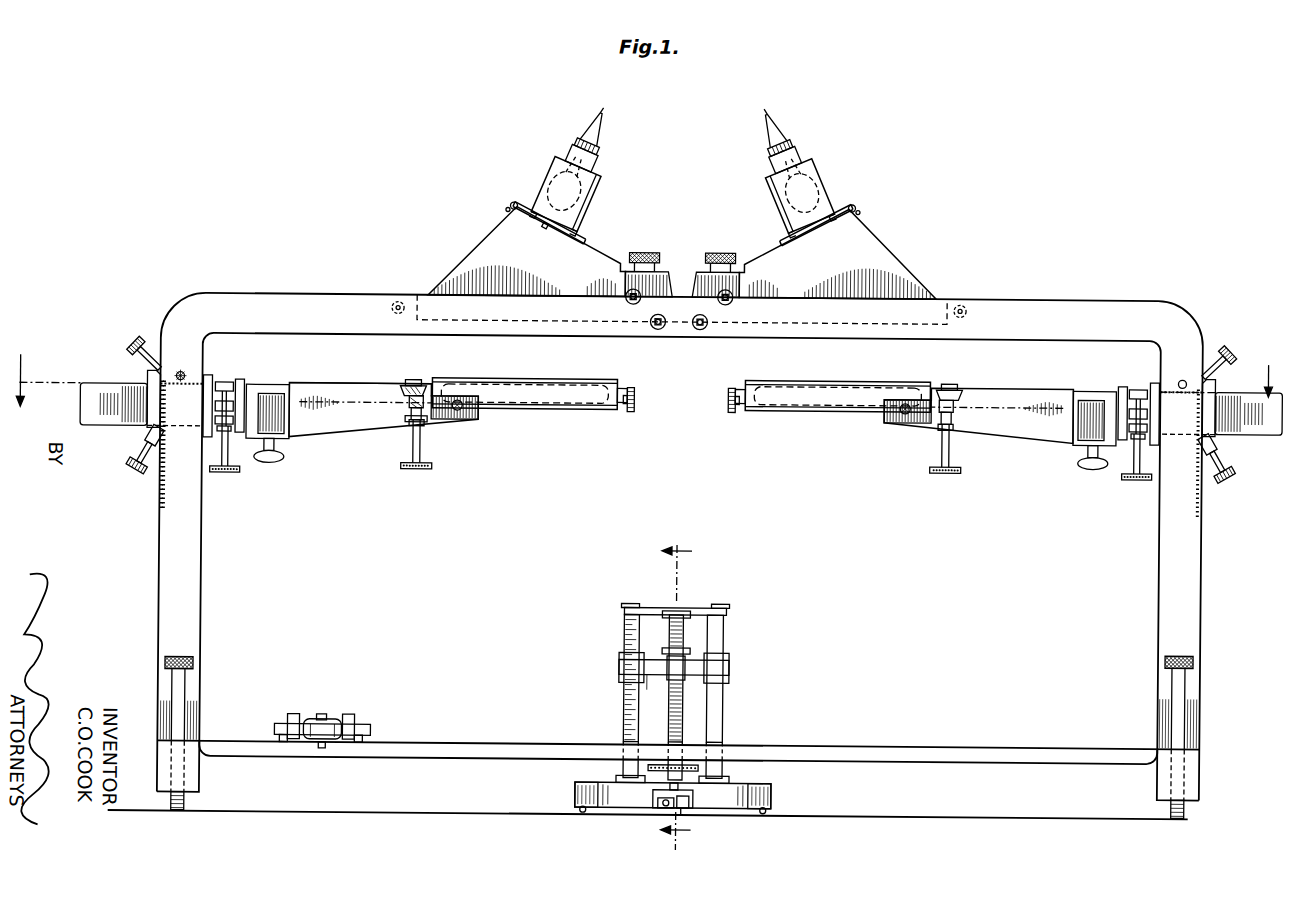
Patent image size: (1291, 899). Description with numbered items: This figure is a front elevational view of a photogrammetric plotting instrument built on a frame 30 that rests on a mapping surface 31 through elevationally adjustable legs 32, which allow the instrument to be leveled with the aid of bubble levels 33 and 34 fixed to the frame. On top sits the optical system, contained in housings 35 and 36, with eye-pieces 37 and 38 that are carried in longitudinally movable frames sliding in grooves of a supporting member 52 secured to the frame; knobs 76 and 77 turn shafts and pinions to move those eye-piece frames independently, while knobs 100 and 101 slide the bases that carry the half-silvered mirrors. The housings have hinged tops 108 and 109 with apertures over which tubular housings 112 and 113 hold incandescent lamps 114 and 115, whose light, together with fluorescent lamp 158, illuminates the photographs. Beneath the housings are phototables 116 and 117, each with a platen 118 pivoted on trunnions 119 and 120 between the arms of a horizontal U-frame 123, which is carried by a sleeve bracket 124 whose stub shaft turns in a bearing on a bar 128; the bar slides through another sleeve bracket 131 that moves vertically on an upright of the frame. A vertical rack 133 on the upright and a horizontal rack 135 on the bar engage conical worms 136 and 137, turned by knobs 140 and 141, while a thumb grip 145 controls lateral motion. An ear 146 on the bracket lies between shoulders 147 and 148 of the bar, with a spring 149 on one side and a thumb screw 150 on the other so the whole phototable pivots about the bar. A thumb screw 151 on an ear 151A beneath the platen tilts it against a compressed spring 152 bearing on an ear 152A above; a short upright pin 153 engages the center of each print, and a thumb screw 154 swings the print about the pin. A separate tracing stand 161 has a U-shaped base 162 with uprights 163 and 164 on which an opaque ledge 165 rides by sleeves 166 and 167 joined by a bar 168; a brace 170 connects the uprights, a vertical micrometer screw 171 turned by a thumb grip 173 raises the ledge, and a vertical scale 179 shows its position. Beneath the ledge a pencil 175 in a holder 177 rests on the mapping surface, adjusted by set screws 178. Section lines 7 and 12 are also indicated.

The section line 7- 7 is at (636, 372).
The section line 12- 12 is at (692, 868).
The frame 30 is at (203, 612).
The mapping surface 31 is at (386, 815).
The elevationally adjustable legs 32 is at (188, 807).
The bubble level 33 is at (325, 752).
The bubble level 34 is at (313, 718).
The housing 35 is at (460, 278).
The housing 36 is at (893, 278).
The eye-piece 37 is at (642, 213).
The eye-piece 38 is at (716, 213).
The supporting member 52 is at (966, 312).
The knob 76 is at (624, 301).
The knob 77 is at (730, 302).
The knob 100 is at (656, 330).
The knob 101 is at (698, 330).
The hinged top 108 is at (615, 264).
The hinged top 109 is at (746, 264).
The tubular housing 112 is at (553, 173).
The tubular housing 113 is at (808, 177).
The incandescent lamp 114 is at (596, 190).
The incandescent lamp 115 is at (766, 190).
The phototable 116 is at (370, 440).
The phototable 117 is at (1010, 436).
The platen 118 is at (560, 410).
The trunnion 119 is at (463, 422).
The trunnion 120 is at (902, 418).
The horizontal U-frame 123 is at (368, 388).
The sleeve bracket 124 is at (290, 388).
The bar 128 is at (101, 431).
The sleeve bracket 131 is at (204, 422).
The vertical rack 133 is at (159, 514).
The horizontal rack 135 is at (132, 386).
The conical worm 136 is at (150, 431).
The conical worm 137 is at (180, 375).
The knob 140 is at (141, 481).
The knob 141 is at (130, 353).
The thumb grip 145 is at (282, 464).
The ear 146 is at (243, 418).
The shoulder 147 is at (226, 390).
The shoulder 148 is at (238, 440).
The spring 149 is at (244, 396).
The thumb screw 150 is at (238, 462).
The thumb screw 151 is at (419, 457).
The ear 151A is at (426, 426).
The compressed spring 152 is at (409, 415).
The ear 152A is at (413, 377).
The upright pin 153 is at (459, 402).
The thumb screw 154 is at (722, 405).
The fluorescent lamp 158 is at (562, 388).
The tracing stand 161 is at (782, 797).
The U-shaped base 162 is at (577, 798).
The upright 163 is at (627, 728).
The upright 164 is at (726, 712).
The opaque ledge 165 is at (690, 648).
The sleeve 166 is at (622, 670).
The sleeve 167 is at (731, 669).
The bar 168 is at (652, 680).
The brace 170 is at (702, 607).
The vertical micrometer screw 171 is at (685, 726).
The thumb grip 173 is at (702, 769).
The pencil 175 is at (688, 812).
The holder 177 is at (666, 812).
The set screws 178 is at (689, 805).
The vertical scale 179 is at (628, 634).